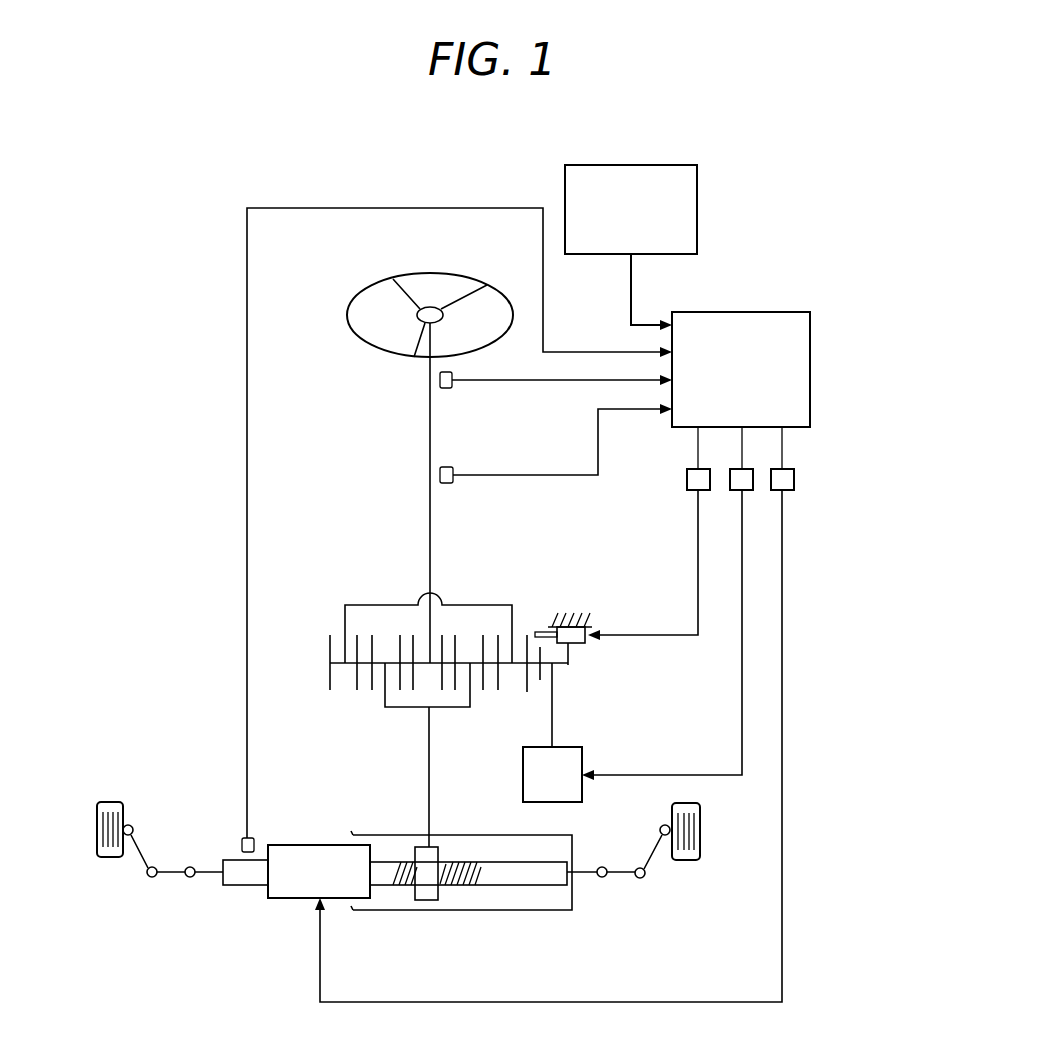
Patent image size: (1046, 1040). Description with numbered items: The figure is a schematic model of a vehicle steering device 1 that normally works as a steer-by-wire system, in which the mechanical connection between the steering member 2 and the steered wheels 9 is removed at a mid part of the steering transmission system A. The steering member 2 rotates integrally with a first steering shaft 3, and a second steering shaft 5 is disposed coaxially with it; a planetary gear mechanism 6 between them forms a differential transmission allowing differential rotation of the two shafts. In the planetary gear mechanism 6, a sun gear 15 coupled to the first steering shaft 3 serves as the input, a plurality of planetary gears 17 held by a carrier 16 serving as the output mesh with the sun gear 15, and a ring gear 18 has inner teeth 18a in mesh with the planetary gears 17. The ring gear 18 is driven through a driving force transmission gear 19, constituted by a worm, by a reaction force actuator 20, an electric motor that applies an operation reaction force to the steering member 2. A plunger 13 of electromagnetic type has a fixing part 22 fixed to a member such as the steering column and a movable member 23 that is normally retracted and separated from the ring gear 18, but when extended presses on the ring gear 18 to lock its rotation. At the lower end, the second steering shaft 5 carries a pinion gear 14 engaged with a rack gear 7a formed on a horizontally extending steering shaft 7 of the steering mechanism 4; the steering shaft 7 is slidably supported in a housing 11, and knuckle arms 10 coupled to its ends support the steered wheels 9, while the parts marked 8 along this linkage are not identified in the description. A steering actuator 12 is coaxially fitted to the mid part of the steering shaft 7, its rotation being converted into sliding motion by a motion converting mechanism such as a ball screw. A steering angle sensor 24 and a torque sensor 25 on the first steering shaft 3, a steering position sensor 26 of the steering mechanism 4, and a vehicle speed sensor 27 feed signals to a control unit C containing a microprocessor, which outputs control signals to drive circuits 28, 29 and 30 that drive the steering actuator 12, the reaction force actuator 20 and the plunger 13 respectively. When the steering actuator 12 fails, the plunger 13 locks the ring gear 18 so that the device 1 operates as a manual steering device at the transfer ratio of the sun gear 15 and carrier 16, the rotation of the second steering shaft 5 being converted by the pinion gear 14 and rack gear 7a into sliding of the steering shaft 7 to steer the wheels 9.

The vehicle steering device 1 is at (205, 388).
The steering member 2 is at (347, 317).
The first steering shaft 3 is at (428, 421).
The steering transmission system A is at (340, 452).
The steering mechanism 4 is at (472, 852).
The second steering shaft 5 is at (428, 801).
The planetary gear mechanism 6 is at (417, 646).
The steering shaft 7 is at (585, 878).
The rack gear 7a is at (468, 871).
The tie rod joint 8 is at (173, 878).
The steered wheels 9 is at (110, 802).
The knuckle arms 10 is at (141, 855).
The housing 11 is at (535, 911).
The steering actuator 12 is at (318, 845).
The plunger 13 is at (586, 654).
The pinion gear 14 is at (428, 901).
The sun gear 15 is at (446, 650).
The carrier 16 is at (385, 709).
The planetary gears 17 is at (371, 695).
The ring gear 18 is at (330, 672).
The inner teeth 18a is at (498, 695).
The driving force transmission gear 19 is at (568, 670).
The reaction force actuator 20 is at (523, 772).
The fixing part 22 is at (590, 622).
The movable member 23 is at (548, 630).
The steering angle sensor 24 is at (455, 386).
The torque sensor 25 is at (455, 470).
The steering position sensor 26 is at (246, 836).
The vehicle speed sensor 27 is at (697, 211).
The drive circuit 28 is at (794, 480).
The drive circuit 29 is at (738, 492).
The drive circuit 30 is at (687, 480).
The control unit C is at (810, 369).